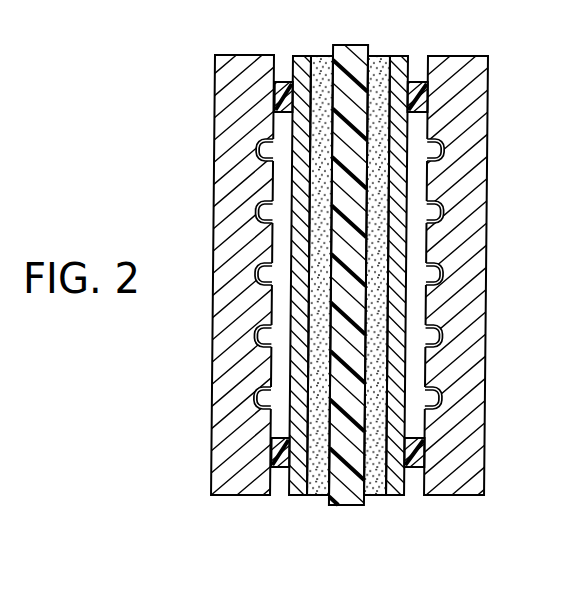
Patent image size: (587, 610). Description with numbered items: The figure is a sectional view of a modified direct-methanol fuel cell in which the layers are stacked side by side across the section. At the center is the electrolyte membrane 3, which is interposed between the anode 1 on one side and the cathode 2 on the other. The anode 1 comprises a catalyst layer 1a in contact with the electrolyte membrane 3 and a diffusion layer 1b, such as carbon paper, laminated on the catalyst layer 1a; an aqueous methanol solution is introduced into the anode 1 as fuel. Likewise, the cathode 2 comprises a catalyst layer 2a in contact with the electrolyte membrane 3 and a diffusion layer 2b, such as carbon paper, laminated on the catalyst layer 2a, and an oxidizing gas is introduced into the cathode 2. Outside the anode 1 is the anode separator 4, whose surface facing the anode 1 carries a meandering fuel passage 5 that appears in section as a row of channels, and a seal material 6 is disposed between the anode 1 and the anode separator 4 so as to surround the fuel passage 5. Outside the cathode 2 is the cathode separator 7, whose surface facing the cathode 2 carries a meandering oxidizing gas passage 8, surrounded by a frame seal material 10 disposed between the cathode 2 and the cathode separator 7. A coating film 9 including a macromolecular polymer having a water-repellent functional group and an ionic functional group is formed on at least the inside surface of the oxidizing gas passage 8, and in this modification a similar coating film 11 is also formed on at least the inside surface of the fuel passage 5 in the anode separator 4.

The anode 1 is at (300, 318).
The catalyst layer 1a is at (318, 300).
The diffusion layer 1b is at (302, 497).
The cathode 2 is at (391, 318).
The catalyst layer 2a is at (381, 497).
The diffusion layer 2b is at (404, 300).
The electrolyte membrane 3 is at (356, 57).
The anode separator 4 is at (230, 68).
The fuel passage 5 is at (252, 163).
The seal material 6 is at (286, 92).
The cathode separator 7 is at (478, 104).
The oxidizing gas passage 8 is at (450, 163).
The coating film 9 is at (437, 155).
The frame seal material 10 is at (418, 88).
The coating film 11 is at (270, 141).